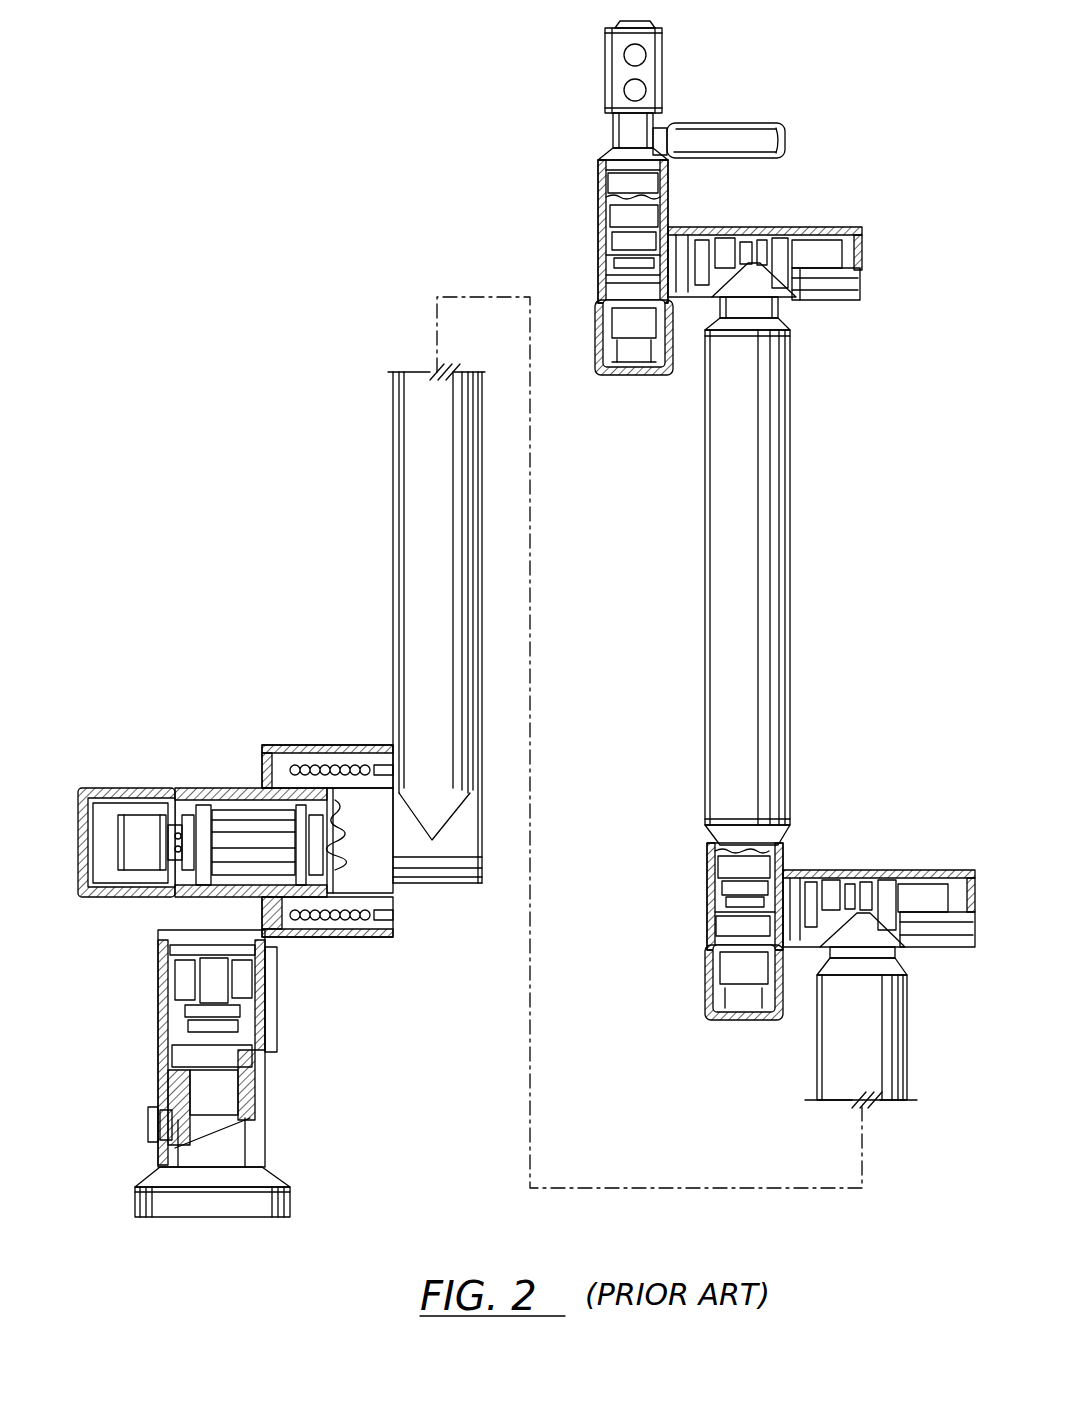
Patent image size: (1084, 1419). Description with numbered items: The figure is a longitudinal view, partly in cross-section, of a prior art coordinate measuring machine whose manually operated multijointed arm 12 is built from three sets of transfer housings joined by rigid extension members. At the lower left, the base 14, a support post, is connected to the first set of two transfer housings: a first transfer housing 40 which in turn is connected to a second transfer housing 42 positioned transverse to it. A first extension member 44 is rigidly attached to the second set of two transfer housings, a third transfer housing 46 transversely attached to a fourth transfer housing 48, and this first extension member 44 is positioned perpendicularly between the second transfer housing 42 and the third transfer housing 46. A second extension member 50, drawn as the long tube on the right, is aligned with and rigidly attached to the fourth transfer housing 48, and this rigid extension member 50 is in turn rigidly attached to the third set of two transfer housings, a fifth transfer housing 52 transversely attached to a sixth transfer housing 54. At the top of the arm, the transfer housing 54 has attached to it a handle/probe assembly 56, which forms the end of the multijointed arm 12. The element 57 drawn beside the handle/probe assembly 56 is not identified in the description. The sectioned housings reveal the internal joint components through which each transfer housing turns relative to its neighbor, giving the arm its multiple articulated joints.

The multijointed arm 12 is at (360, 257).
The base 14 is at (267, 1147).
The first transfer housing 40 is at (158, 988).
The second transfer housing 42 is at (232, 790).
The first extension member 44 is at (818, 1068).
The third transfer housing 46 is at (868, 868).
The fourth transfer housing 48 is at (707, 901).
The second extension member 50 is at (705, 525).
The fifth transfer housing 52 is at (810, 225).
The sixth transfer housing 54 is at (597, 305).
The handle/probe assembly 56 is at (665, 68).
The handle 57 is at (733, 123).